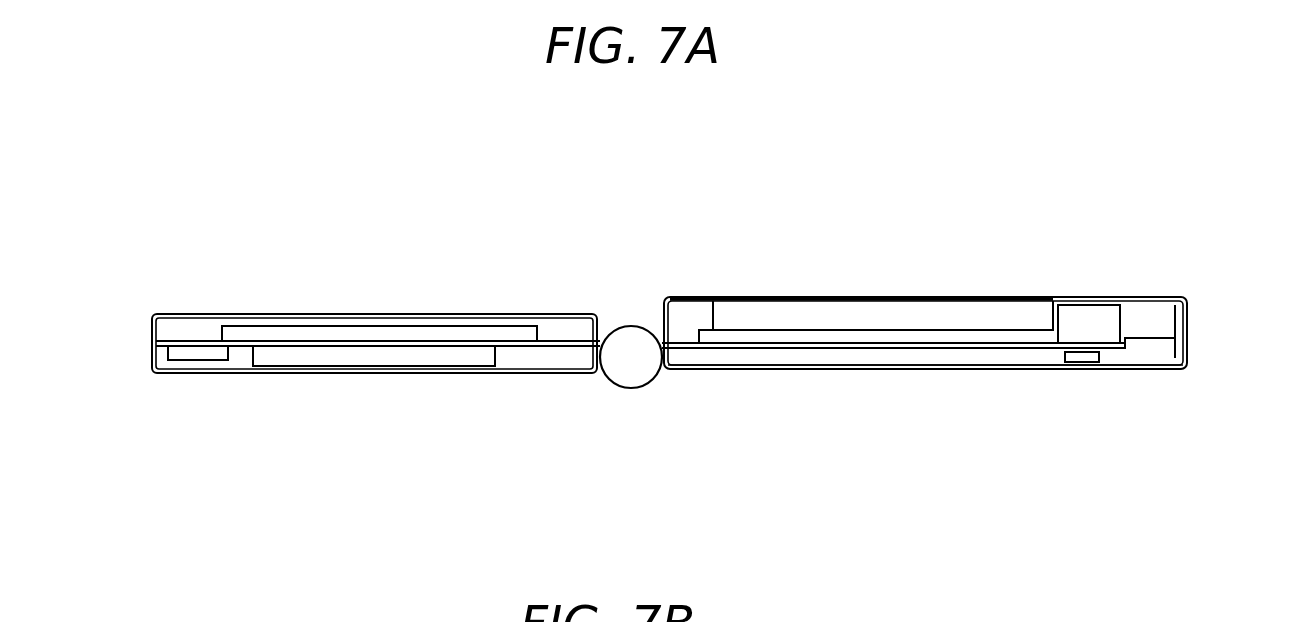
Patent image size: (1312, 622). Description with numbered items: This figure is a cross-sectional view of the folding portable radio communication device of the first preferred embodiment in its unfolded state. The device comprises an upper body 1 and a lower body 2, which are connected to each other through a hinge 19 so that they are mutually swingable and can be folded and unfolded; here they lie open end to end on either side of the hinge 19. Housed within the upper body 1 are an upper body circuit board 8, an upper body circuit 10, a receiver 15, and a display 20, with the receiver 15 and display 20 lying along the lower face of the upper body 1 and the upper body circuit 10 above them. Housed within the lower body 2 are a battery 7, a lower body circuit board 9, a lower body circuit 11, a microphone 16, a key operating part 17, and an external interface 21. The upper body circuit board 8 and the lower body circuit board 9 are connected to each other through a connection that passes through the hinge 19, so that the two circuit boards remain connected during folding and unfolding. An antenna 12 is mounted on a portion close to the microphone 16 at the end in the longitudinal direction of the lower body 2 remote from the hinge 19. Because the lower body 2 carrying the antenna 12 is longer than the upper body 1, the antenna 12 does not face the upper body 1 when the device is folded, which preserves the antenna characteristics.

The upper body 1 is at (255, 295).
The lower body 2 is at (965, 272).
The battery 7 is at (800, 297).
The upper body circuit board 8 is at (532, 345).
The lower body circuit board 9 is at (993, 349).
The upper body circuit 10 is at (465, 330).
The lower body circuit 11 is at (728, 342).
The antenna 12 is at (1167, 314).
The receiver 15 is at (185, 363).
The microphone 16 is at (1084, 368).
The key operating part 17 is at (830, 368).
The hinge 19 is at (625, 323).
The display 20 is at (315, 365).
The external interface 21 is at (1096, 326).